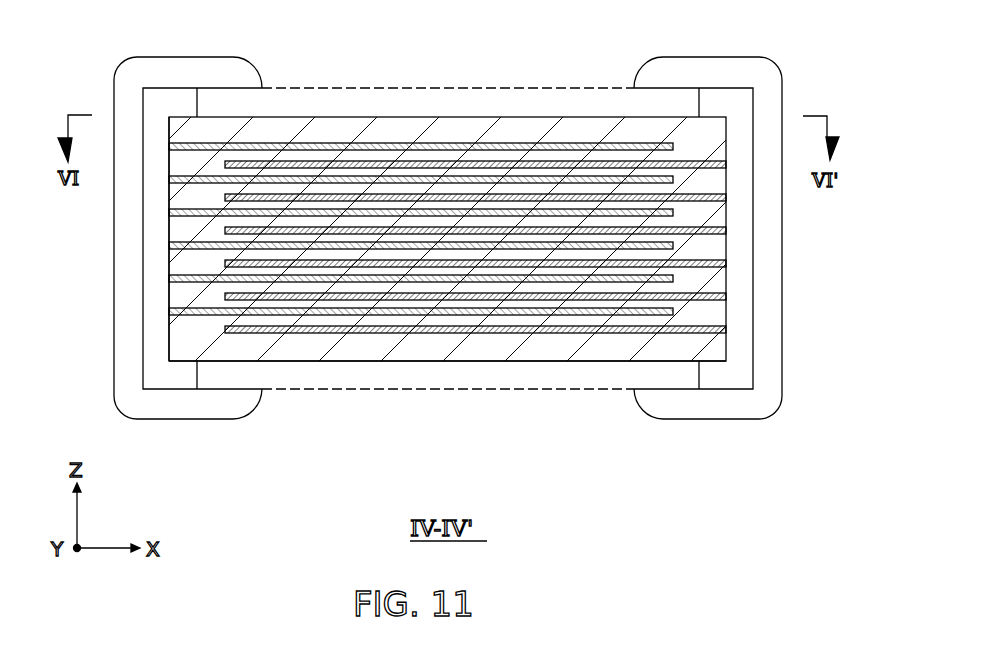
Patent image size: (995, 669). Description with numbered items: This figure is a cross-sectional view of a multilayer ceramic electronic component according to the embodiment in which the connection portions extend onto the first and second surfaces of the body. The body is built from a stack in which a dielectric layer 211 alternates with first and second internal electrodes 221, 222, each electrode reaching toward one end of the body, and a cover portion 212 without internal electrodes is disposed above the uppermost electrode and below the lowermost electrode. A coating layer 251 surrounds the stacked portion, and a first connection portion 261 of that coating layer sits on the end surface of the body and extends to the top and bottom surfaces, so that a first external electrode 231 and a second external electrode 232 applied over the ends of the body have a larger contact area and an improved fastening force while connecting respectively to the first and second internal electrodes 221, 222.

The dielectric layer 211 is at (717, 280).
The cover portion 212 is at (707, 137).
The first internal electrode 221 is at (690, 243).
The second internal electrode 222 is at (718, 293).
The first external electrode 231 is at (187, 72).
The second external electrode 232 is at (715, 72).
The lower margin portion 251 is at (365, 373).
The first connection portion 261 is at (153, 267).